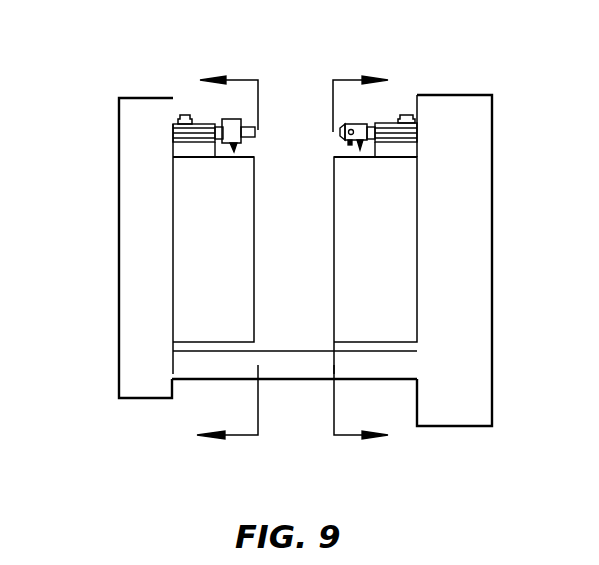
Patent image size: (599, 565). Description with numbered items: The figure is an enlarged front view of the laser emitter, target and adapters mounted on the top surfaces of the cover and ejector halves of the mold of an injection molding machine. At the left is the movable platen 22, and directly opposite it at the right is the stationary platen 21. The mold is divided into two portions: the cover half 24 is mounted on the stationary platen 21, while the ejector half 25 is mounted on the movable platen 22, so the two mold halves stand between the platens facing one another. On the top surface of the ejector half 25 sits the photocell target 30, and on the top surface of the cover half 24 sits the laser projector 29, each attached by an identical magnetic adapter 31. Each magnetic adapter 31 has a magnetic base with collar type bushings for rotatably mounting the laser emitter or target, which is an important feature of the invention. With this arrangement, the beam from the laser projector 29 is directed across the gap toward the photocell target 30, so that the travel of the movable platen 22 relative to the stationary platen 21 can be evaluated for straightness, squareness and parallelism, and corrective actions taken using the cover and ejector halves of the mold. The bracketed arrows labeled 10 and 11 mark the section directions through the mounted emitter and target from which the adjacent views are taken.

The section line 10- 10 is at (241, 258).
The section line 11- 11 is at (350, 258).
The stationary platen 21 is at (492, 145).
The movable platen 22 is at (118, 145).
The cover half 24 is at (386, 246).
The ejector half 25 is at (228, 246).
The laser projector 29 is at (357, 125).
The photocell target 30 is at (233, 119).
The magnetic adapter 31 is at (183, 115).